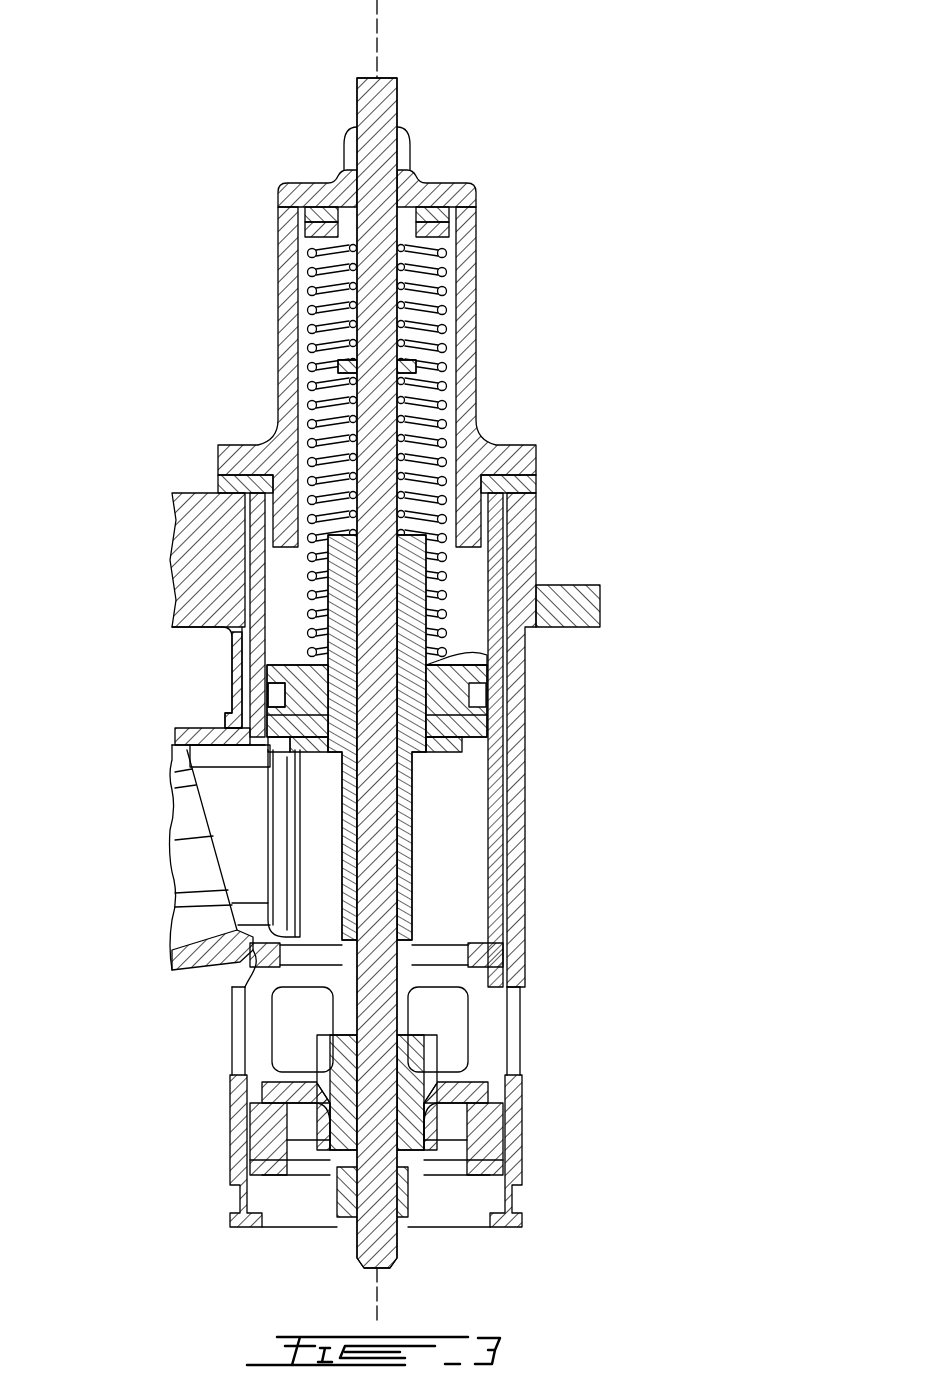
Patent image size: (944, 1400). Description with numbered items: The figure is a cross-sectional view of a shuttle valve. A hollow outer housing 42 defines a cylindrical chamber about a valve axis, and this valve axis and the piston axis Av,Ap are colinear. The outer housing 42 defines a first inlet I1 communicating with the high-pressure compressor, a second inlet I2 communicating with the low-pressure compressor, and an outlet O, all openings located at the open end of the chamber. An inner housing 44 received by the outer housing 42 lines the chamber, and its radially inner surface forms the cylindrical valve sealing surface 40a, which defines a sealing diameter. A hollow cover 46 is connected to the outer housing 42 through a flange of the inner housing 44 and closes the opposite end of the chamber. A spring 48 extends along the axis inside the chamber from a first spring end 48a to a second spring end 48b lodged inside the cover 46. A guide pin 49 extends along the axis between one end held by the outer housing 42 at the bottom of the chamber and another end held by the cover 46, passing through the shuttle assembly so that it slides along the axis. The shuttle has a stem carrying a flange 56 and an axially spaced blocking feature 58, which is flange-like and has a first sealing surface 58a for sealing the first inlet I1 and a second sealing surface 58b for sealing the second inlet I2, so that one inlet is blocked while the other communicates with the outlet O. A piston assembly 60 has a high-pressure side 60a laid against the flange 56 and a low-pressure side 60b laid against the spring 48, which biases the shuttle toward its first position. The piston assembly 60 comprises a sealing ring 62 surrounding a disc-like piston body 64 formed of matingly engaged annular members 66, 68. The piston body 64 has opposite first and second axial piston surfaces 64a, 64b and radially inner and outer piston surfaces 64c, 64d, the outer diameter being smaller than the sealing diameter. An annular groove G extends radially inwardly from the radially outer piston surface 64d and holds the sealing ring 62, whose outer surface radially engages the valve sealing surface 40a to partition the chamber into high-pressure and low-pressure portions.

The guide pin 49 is at (397, 103).
The second spring end 48b is at (305, 248).
The spring 48 is at (447, 350).
The first spring end 48a is at (480, 625).
The cover 46 is at (249, 446).
The inner housing 44 is at (225, 484).
The outer housing 42 is at (180, 498).
The valve sealing surface 40a is at (490, 578).
The low-pressure side 60b is at (297, 652).
The annular member 68 is at (455, 665).
The second axial piston surface 64b is at (275, 672).
The annular groove G is at (268, 694).
The sealing ring 62 is at (498, 690).
The radially outer piston surface 64d is at (265, 725).
The piston assembly 60 is at (632, 675).
The piston body 64 is at (498, 718).
The first axial piston surface 64a is at (268, 750).
The flange 56 is at (458, 745).
The high-pressure side 60a is at (305, 752).
The annular member 66 is at (446, 752).
The radially inner piston surface 64c is at (360, 750).
The second inlet I2 is at (195, 858).
The outlet O is at (265, 1050).
The second sealing surface 58b is at (482, 1075).
The blocking feature 58 is at (488, 1093).
The first sealing surface 58a is at (490, 1112).
The first inlet I1 is at (313, 1190).
The valve axis and piston axis Av,Ap is at (380, 14).